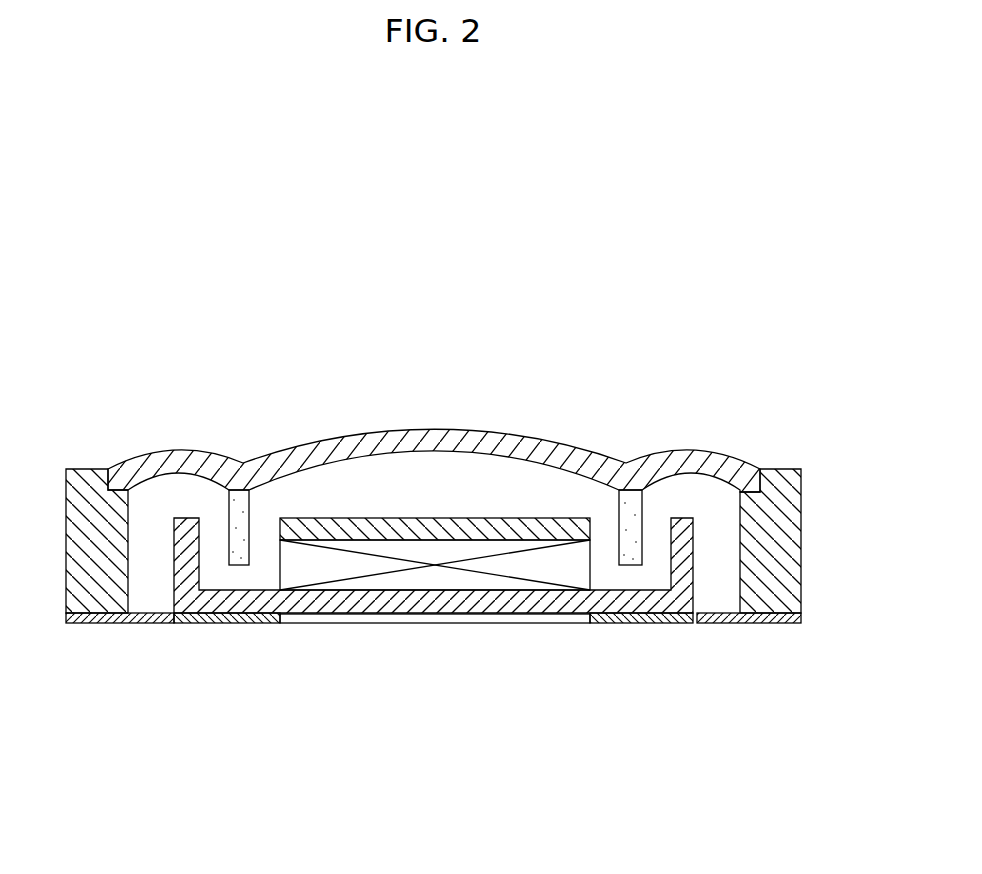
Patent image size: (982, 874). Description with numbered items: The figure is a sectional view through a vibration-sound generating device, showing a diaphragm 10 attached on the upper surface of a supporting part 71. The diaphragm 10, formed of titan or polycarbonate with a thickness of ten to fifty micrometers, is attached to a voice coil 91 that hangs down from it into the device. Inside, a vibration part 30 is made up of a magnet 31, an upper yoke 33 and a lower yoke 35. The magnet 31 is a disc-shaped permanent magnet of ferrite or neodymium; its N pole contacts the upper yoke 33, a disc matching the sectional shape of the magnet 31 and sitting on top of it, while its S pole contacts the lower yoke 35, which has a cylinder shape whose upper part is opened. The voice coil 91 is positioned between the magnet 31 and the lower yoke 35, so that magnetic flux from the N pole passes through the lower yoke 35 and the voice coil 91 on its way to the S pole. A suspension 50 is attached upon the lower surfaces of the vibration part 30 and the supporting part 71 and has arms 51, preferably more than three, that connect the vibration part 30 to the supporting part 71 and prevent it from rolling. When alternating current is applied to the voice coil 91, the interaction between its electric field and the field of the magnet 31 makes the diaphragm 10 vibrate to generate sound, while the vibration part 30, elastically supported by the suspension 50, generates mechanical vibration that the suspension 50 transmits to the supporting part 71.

The diaphragm 10 is at (438, 428).
The voice coil 91 is at (232, 512).
The upper yoke 33 is at (527, 518).
The magnet 31 is at (432, 580).
The lower yoke 35 is at (692, 575).
The supporting part 71 is at (790, 518).
The arm 51 is at (157, 623).
The suspension 50 is at (720, 625).
The vibration part 30 is at (366, 623).